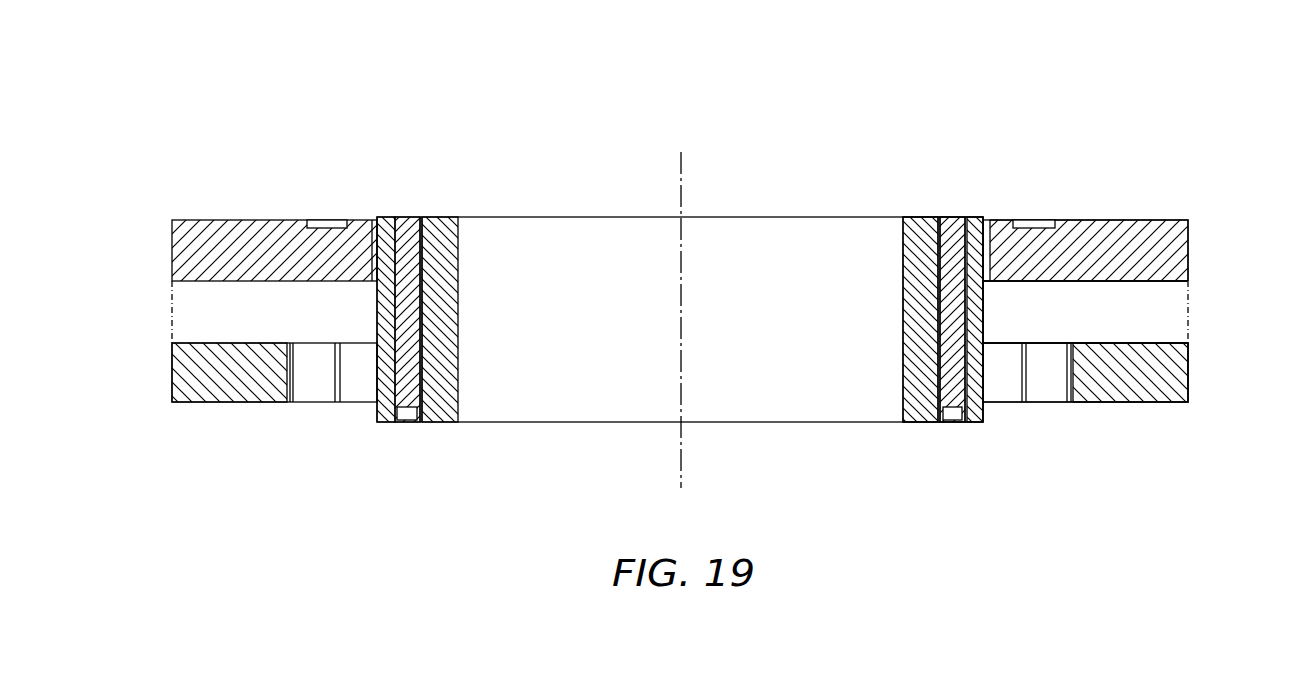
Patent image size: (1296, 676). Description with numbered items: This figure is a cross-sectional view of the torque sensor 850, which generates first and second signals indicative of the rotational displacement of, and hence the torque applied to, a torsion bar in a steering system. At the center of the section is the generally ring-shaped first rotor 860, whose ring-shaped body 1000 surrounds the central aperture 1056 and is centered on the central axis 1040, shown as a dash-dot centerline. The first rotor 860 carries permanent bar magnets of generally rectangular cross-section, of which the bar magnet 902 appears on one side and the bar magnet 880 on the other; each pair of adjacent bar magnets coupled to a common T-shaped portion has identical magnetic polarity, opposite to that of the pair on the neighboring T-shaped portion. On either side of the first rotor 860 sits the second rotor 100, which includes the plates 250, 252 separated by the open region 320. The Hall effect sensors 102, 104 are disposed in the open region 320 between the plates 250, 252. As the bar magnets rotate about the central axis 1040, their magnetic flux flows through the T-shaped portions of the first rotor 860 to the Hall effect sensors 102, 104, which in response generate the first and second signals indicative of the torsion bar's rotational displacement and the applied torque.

The second rotor 100 is at (1090, 218).
The Hall effect sensor 102 is at (1165, 307).
The Hall effect sensor 104 is at (197, 307).
The plate 250 is at (1172, 245).
The plate 252 is at (1170, 370).
The open region 320 is at (1107, 326).
The torque sensor 850 is at (926, 130).
The first rotor 860 is at (447, 227).
The bar magnet 880 is at (952, 220).
The bar magnet 902 is at (405, 228).
The ring-shaped body 1000 is at (920, 215).
The central axis 1040 is at (682, 191).
The central aperture 1056 is at (622, 345).